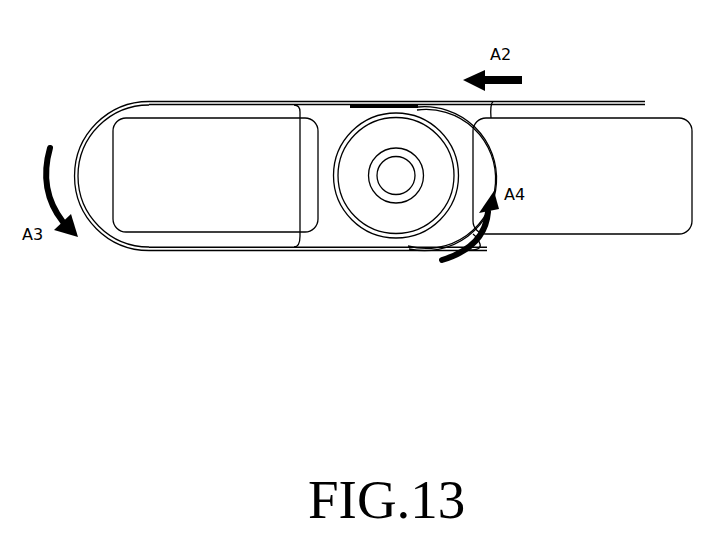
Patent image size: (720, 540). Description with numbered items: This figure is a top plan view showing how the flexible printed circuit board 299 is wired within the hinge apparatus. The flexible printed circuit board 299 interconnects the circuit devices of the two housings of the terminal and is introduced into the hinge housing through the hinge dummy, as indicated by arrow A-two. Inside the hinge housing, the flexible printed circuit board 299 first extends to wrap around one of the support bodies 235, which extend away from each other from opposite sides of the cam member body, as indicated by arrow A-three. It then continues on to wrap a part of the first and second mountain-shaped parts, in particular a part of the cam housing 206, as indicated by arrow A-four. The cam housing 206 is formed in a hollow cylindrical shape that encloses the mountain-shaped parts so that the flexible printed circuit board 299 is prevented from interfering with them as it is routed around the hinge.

The support body 235 is at (193, 135).
The cam housing 206 is at (352, 131).
The flexible printed circuit board 299 is at (425, 249).